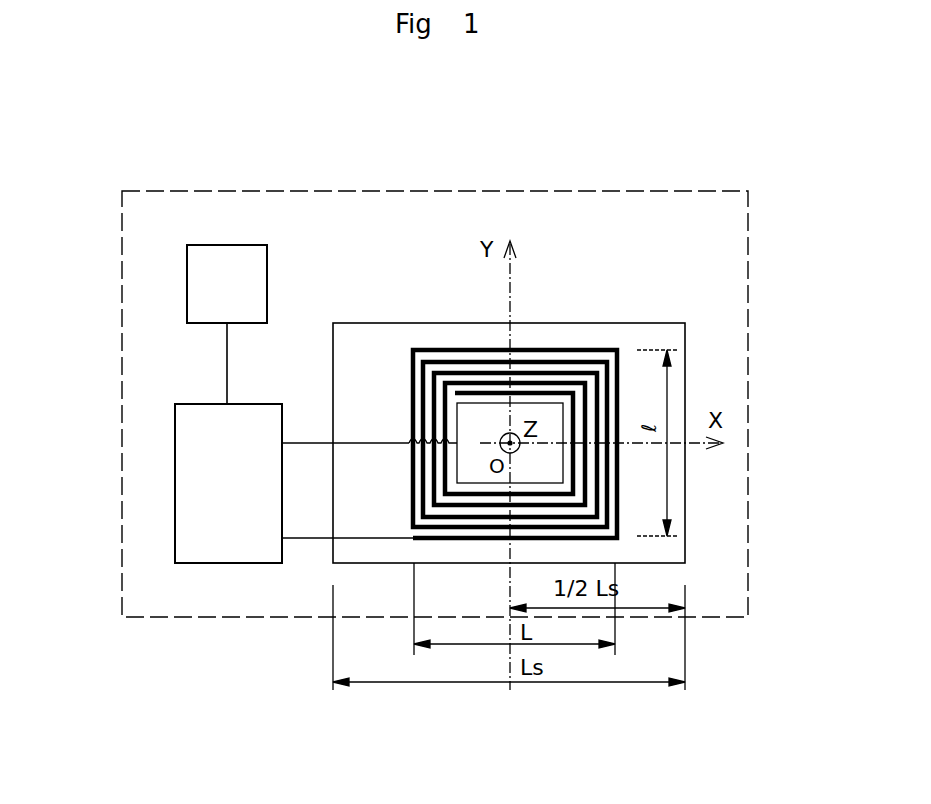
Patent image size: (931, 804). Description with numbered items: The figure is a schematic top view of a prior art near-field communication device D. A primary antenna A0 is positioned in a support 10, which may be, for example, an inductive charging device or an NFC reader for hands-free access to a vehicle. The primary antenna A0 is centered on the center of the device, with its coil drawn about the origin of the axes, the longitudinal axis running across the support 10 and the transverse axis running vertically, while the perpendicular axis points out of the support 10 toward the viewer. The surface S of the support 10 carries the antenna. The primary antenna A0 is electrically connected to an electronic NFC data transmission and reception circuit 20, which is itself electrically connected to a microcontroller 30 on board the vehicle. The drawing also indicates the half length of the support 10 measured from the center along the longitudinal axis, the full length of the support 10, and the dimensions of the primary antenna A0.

The support 10 is at (686, 340).
The electronic NFC data transmission and reception circuit 20 is at (190, 477).
The microcontroller 30 is at (245, 258).
The NFC device D is at (750, 230).
The surface of substrate S is at (605, 332).
The primary antenna A0 is at (571, 358).